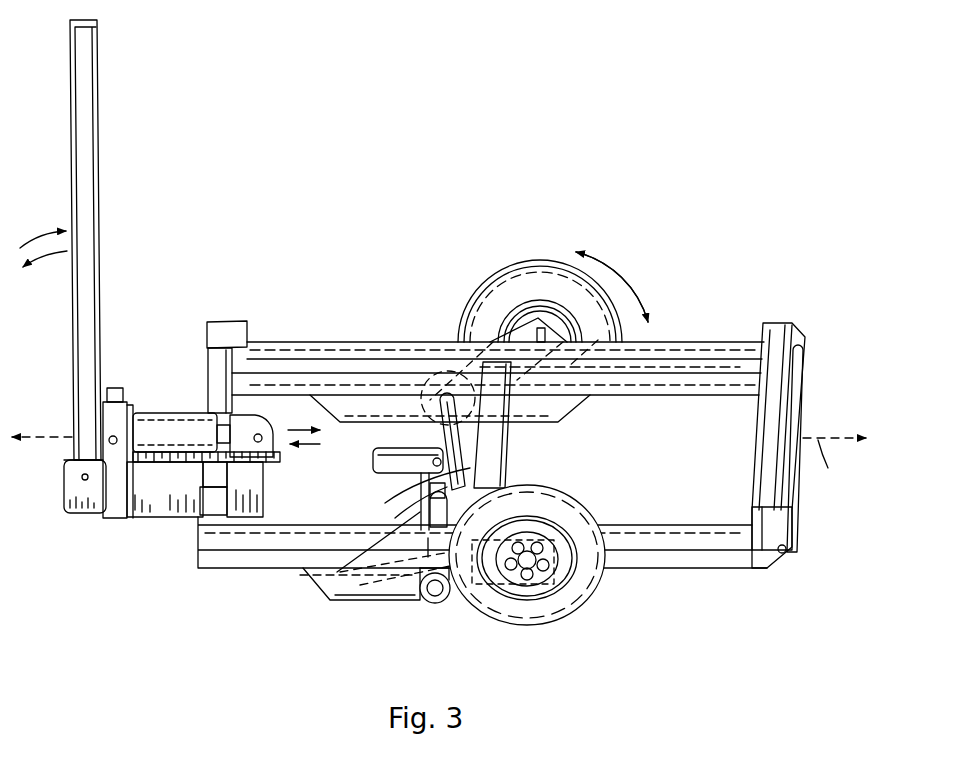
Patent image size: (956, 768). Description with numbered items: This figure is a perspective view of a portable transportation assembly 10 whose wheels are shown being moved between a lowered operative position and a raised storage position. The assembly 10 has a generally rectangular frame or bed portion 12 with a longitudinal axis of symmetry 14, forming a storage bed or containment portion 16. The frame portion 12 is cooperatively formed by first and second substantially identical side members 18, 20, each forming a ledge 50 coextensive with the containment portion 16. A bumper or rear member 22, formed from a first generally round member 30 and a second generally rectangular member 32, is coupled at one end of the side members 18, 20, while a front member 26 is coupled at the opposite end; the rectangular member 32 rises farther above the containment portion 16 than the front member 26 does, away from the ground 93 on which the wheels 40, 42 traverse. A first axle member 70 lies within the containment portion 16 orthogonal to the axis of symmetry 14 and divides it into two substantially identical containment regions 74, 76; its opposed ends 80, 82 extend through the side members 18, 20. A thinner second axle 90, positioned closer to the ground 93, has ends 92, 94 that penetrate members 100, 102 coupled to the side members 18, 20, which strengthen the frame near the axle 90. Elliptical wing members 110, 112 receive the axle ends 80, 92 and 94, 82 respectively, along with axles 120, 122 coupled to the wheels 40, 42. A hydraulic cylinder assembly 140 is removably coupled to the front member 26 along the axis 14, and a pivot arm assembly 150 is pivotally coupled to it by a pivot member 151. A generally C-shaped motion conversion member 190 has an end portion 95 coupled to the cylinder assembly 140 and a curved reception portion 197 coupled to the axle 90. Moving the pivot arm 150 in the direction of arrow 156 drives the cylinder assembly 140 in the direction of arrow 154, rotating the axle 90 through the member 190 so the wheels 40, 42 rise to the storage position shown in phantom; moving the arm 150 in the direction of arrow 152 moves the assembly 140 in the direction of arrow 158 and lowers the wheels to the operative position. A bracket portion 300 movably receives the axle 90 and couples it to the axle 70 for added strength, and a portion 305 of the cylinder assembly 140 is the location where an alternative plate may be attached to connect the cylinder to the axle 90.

The portable transportation assembly 10 is at (748, 222).
The frame or bed portion 12 is at (718, 338).
The longitudinal axis of symmetry 14 is at (832, 467).
The storage/containment portion 16 is at (553, 444).
The first side member 18 is at (708, 550).
The second side member 20 is at (660, 357).
The bumper or rear member 22 is at (778, 338).
The front member 26 is at (220, 410).
The first generally round member 30 is at (803, 400).
The second generally rectangular member 32 is at (770, 428).
The wheel 40 is at (578, 595).
The wheel 42 is at (497, 293).
The ledge 50 is at (325, 385).
The first axle member 70 is at (478, 468).
The first containment region 74 is at (647, 504).
The second containment region 76 is at (280, 504).
The end of first axle 80 is at (492, 590).
The end of first axle 82 is at (494, 365).
The second axle 90 is at (330, 573).
The end of second axle 92 is at (432, 592).
The ground 93 is at (774, 629).
The end of second axle 94 is at (440, 395).
The end portion of motion conversion member 95 is at (415, 460).
The support member 100 is at (377, 588).
The support member 102 is at (555, 405).
The wing member 110 is at (447, 603).
The wing member 112 is at (522, 320).
The axle 120 is at (530, 568).
The axle 122 is at (538, 318).
The hydraulic cylinder assembly 140 is at (155, 455).
The pivot arm assembly 150 is at (99, 259).
The pivot member 151 is at (85, 481).
The arrow 152 is at (44, 262).
The arrow 154 is at (305, 426).
The arrow 156 is at (44, 236).
The arrow 158 is at (322, 442).
The motion conversion member 190 is at (420, 482).
The curved reception portion 197 is at (428, 505).
The bracket portion 300 is at (345, 572).
The portion of hydraulic cylinder assembly 305 is at (450, 452).